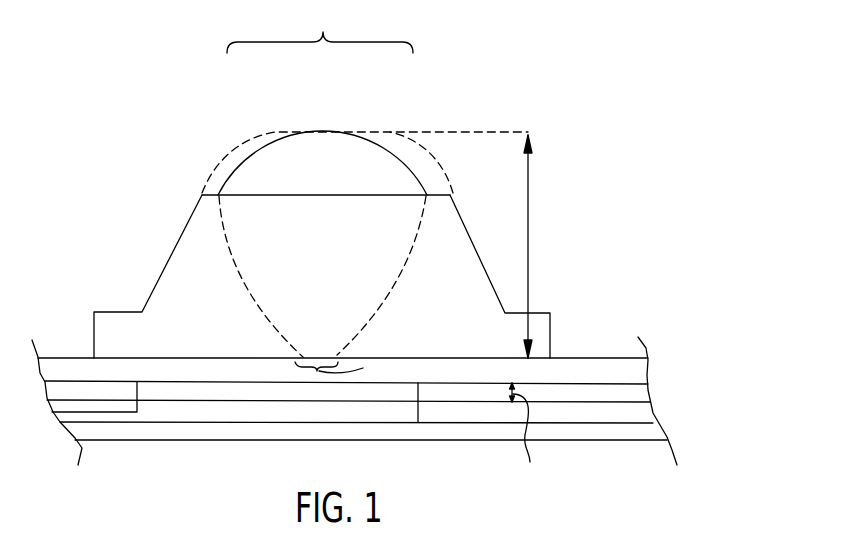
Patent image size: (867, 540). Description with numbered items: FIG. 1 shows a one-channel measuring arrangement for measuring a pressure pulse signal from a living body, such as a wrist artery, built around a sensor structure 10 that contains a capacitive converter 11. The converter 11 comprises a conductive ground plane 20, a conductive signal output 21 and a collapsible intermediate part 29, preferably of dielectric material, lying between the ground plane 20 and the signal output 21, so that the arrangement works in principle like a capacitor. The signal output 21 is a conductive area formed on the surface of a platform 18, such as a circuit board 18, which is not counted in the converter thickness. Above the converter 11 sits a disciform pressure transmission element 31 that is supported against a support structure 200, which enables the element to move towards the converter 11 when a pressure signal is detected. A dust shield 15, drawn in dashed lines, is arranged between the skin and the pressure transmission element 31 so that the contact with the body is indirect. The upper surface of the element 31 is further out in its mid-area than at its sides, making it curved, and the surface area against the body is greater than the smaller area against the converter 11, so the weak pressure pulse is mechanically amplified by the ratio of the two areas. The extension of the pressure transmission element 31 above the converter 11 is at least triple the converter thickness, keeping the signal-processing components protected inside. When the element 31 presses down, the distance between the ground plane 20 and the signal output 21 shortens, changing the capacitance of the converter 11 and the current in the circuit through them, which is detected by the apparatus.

The sensor structure 10 is at (518, 55).
The converter 11 is at (672, 360).
The dust shield 15 is at (242, 143).
The platform 18 is at (466, 433).
The conductive ground plane 20 is at (562, 372).
The conductive signal output 21 is at (202, 412).
The intermediate part 29 is at (177, 393).
The pressure transmission element 31 is at (355, 150).
The support structure 200 is at (182, 255).